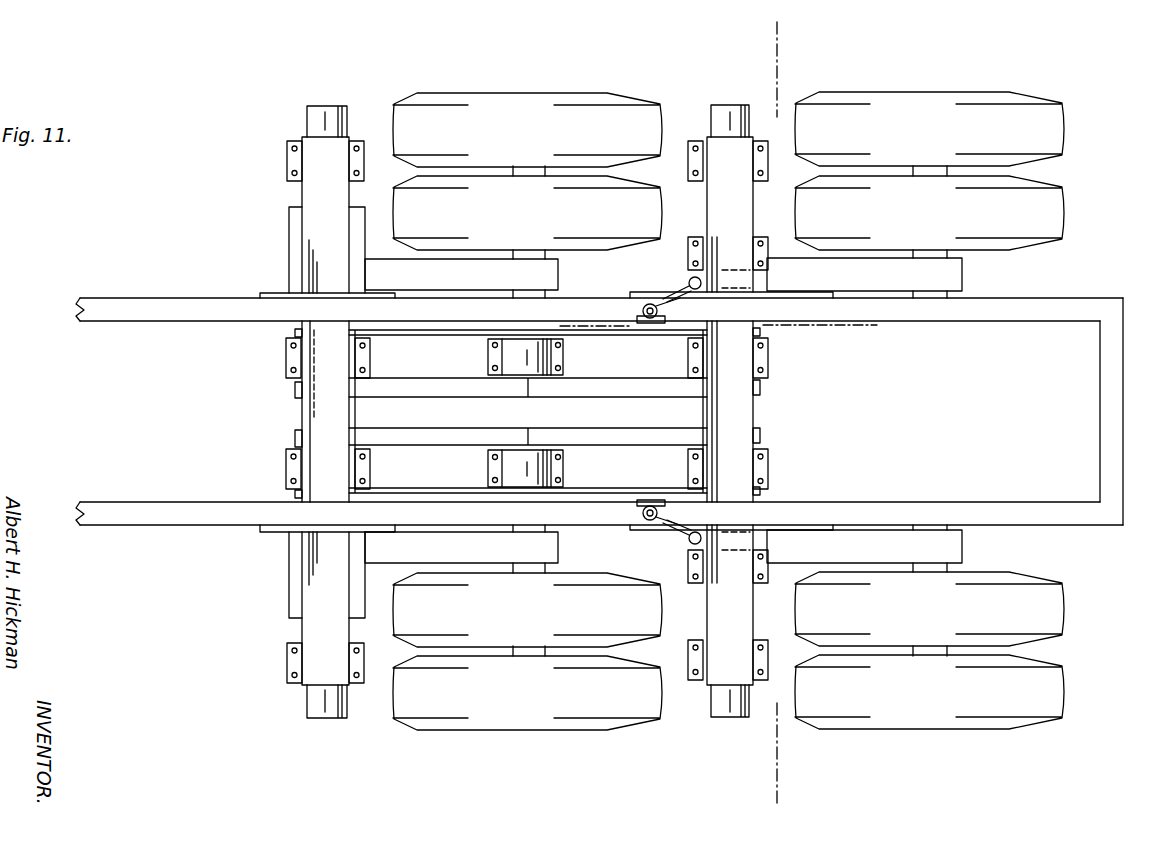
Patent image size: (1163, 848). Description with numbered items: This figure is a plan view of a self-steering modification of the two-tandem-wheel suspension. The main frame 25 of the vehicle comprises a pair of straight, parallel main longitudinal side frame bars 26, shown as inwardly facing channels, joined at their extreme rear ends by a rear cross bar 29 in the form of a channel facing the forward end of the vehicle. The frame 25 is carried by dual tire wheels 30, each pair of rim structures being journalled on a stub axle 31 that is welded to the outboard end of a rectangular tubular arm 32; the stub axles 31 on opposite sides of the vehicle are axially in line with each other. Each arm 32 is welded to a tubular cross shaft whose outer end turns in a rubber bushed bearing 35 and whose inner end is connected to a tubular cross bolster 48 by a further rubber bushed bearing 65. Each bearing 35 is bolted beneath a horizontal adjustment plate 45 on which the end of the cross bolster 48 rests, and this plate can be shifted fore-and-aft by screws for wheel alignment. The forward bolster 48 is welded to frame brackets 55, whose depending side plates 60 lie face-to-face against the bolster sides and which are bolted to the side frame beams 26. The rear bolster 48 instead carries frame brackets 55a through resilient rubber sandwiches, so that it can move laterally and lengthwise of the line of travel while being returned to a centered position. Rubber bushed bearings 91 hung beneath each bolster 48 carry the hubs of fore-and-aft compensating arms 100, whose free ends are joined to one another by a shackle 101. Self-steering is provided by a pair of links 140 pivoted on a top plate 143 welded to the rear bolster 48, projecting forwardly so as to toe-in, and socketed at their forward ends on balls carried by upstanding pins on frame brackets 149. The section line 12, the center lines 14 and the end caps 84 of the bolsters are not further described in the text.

The section line 12- 12 is at (730, 42).
The vehicle frame 14 is at (587, 331).
The main frame 25 is at (163, 290).
The main longitudinal side frame bars 26 is at (76, 306).
The rear cross bar 29 is at (1108, 378).
The dual tire wheels 30 is at (442, 98).
The stub axle 31 is at (526, 168).
The arm 32 is at (548, 274).
The bearing 35 is at (287, 158).
The adjustment plate 45 is at (767, 163).
The cross bolster 48 is at (315, 190).
The frame bracket 55 is at (287, 247).
The frame bracket 55a is at (726, 236).
The side plates 60 is at (356, 243).
The bearing 65 is at (771, 246).
The post cap 84 is at (334, 112).
The bearing 91 is at (286, 358).
The compensating arms 100 is at (450, 334).
The shackle 101 is at (540, 383).
The links 140 is at (672, 285).
The top plate 143 is at (736, 410).
The frame bracket 149 is at (641, 309).